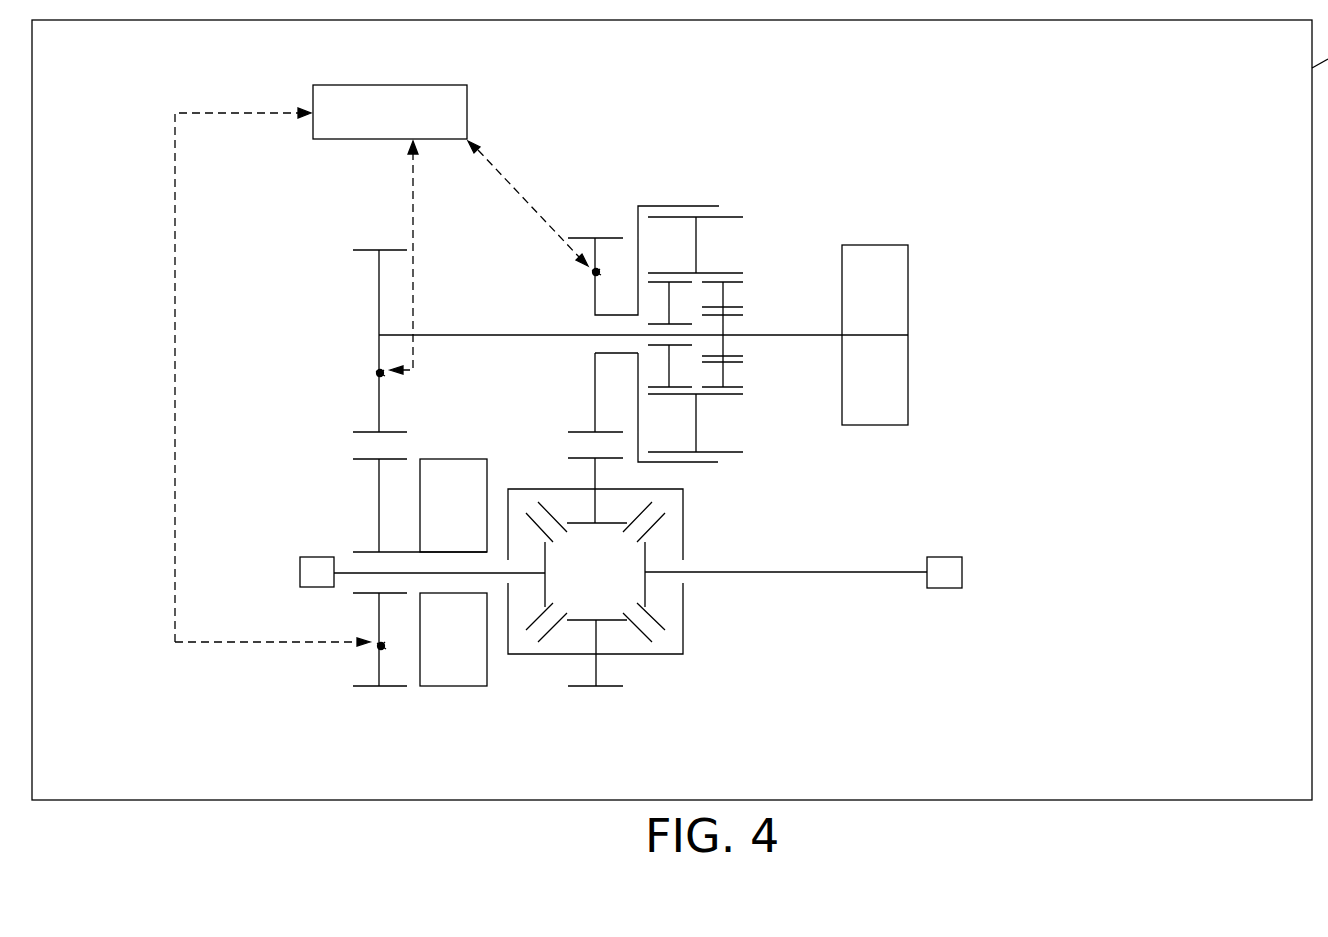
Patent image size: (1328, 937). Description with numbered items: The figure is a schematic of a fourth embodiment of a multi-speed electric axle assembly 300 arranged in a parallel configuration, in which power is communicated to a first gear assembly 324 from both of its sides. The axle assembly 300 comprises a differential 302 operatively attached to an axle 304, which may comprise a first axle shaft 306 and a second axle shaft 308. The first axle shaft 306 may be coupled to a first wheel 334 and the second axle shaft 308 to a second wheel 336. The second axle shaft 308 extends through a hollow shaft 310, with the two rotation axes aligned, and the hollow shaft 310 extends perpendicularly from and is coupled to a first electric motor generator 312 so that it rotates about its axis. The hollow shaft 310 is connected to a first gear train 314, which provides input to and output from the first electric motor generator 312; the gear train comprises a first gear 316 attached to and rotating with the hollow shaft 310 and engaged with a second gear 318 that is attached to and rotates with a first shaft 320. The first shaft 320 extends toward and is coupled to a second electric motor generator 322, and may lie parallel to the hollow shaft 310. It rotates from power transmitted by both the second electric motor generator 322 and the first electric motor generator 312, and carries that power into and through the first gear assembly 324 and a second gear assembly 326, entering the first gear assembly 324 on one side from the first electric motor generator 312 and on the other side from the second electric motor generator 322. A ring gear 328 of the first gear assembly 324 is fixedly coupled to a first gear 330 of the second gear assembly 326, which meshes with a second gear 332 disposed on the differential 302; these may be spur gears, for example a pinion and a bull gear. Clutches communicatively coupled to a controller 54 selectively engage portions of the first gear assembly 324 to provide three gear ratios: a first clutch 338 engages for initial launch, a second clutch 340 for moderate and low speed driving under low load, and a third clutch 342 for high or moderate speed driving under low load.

The controller 54 is at (381, 365).
The multi-speed electric axle assembly 300 is at (1052, 265).
The differential 302 is at (645, 629).
The axle 304 is at (724, 604).
The first axle shaft 306 is at (862, 570).
The second axle shaft 308 is at (350, 575).
The hollow shaft 310 is at (360, 551).
The first electric motor generator 312 is at (450, 688).
The first gear train 314 is at (364, 515).
The first gear 316 is at (378, 677).
The second gear 318 is at (378, 278).
The first shaft 320 is at (430, 335).
The second electric motor generator 322 is at (908, 295).
The first gear assembly 324 is at (749, 280).
The second gear assembly 326 is at (536, 420).
The ring gear 328 is at (672, 206).
The first gear 330 is at (581, 237).
The second gear 332 is at (580, 688).
The first wheel 334 is at (300, 572).
The second wheel 336 is at (962, 572).
The first clutch 338 is at (385, 650).
The second clutch 340 is at (378, 373).
The third clutch 342 is at (593, 274).